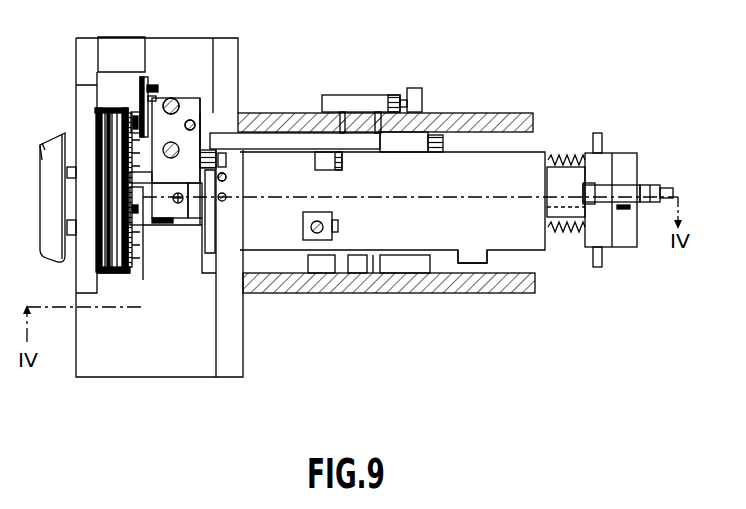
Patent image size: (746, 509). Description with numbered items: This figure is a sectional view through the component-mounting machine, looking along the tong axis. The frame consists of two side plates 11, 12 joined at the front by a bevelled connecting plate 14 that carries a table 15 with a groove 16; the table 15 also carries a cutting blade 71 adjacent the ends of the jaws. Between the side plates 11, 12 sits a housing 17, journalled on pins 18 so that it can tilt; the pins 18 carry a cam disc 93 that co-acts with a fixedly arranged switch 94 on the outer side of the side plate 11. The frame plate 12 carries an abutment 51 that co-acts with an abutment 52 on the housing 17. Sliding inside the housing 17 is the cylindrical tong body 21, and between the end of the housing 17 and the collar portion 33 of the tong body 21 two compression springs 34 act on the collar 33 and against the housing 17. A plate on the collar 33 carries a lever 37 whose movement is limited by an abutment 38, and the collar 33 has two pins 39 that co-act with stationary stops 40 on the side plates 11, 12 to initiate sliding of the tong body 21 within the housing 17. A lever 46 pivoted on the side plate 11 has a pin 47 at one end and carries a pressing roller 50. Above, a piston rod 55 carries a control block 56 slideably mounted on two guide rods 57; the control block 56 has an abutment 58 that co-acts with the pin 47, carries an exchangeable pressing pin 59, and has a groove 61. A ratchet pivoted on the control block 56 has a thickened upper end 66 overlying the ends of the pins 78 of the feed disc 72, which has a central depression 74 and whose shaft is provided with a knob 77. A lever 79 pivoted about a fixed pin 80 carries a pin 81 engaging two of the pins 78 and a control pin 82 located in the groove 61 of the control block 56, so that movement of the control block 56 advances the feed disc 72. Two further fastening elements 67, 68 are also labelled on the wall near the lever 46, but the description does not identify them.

The side plate 11 is at (523, 122).
The side plate 12 is at (513, 285).
The bevelled connecting plate 14 is at (232, 335).
The table 15 is at (96, 365).
The groove 16 is at (198, 220).
The housing 17 is at (478, 170).
The pins 18 is at (365, 295).
The cylindrical tong body 21 is at (560, 228).
The collar portion 33 is at (605, 237).
The compression springs 34 is at (312, 227).
The lever 37 is at (623, 187).
The abutment 38 is at (653, 202).
The pins 39 is at (602, 138).
The stops 40 is at (408, 143).
The lever 46 is at (283, 142).
The pin 47 is at (226, 163).
The pressing roller 50 is at (342, 168).
The abutment 51 is at (322, 295).
The abutment 52 is at (471, 262).
The piston rod 55 is at (200, 128).
The control block 56 is at (194, 122).
The guide rods 57 is at (179, 112).
The abutment 58 is at (226, 175).
The exchangeable pressing pin 59 is at (178, 203).
The groove 61 is at (157, 102).
The thickened upper end 66 is at (147, 194).
The screw 67 is at (224, 201).
The screw 68 is at (224, 181).
The cutting blade 71 is at (127, 218).
The disc 72 is at (128, 280).
The central depression 74 is at (110, 153).
The knob 77 is at (42, 143).
The pins 78 is at (133, 258).
The lever 79 is at (142, 80).
The fixed pin 80 is at (110, 108).
The pin 81 is at (132, 100).
The control pin 82 is at (176, 98).
The cam disc 93 is at (343, 103).
The switch 94 is at (412, 96).